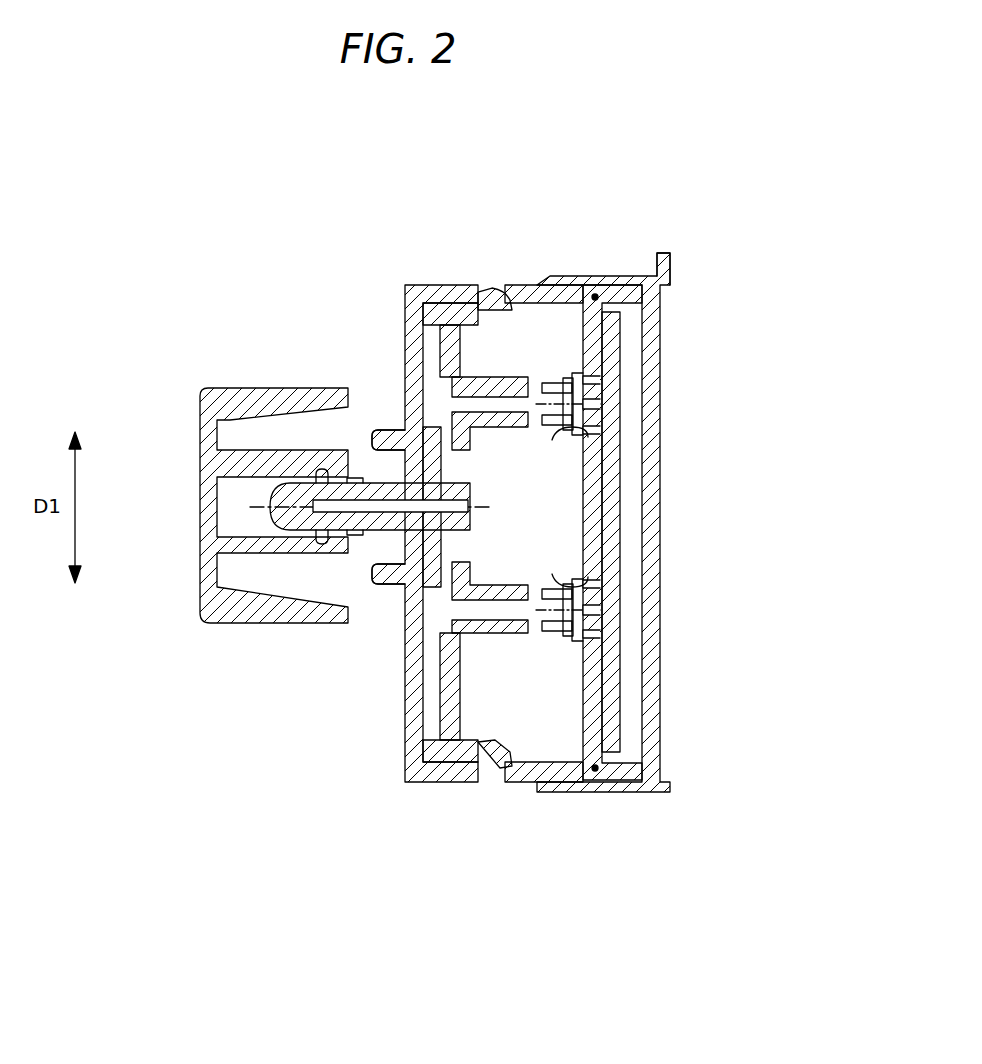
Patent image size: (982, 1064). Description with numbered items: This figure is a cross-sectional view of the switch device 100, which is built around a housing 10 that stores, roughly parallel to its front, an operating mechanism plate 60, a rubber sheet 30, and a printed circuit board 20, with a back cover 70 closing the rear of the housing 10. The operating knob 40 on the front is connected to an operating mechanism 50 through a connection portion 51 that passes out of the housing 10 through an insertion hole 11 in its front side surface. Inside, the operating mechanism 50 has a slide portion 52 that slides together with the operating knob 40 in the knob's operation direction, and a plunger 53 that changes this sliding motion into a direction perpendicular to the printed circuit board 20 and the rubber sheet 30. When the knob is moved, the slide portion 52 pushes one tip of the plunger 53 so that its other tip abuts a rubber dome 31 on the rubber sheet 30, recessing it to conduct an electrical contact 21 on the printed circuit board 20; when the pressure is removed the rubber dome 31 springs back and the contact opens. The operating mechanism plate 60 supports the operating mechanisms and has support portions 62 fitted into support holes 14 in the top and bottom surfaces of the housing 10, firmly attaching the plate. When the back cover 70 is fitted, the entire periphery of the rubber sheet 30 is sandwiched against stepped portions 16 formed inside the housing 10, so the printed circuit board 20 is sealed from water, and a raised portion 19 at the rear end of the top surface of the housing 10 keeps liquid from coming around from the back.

The switch device 100 is at (462, 92).
The housing 10 is at (414, 290).
The insertion hole 11 is at (375, 568).
The support hole 14 is at (488, 295).
The stepped portion 16 is at (580, 296).
The raised portion 19 is at (662, 258).
The printed circuit board 20 is at (620, 670).
The electrical contact 21 is at (582, 425).
The rubber sheet 30 is at (603, 712).
The rubber dome 31 is at (560, 433).
The operating knob 40 is at (236, 386).
The operating mechanism 50 is at (400, 486).
The connection portion 51 is at (272, 497).
The slide portion 52 is at (396, 466).
The plunger 53 is at (440, 390).
The operating mechanism plate 60 is at (445, 710).
The support portion 62 is at (504, 305).
The back cover 70 is at (660, 318).